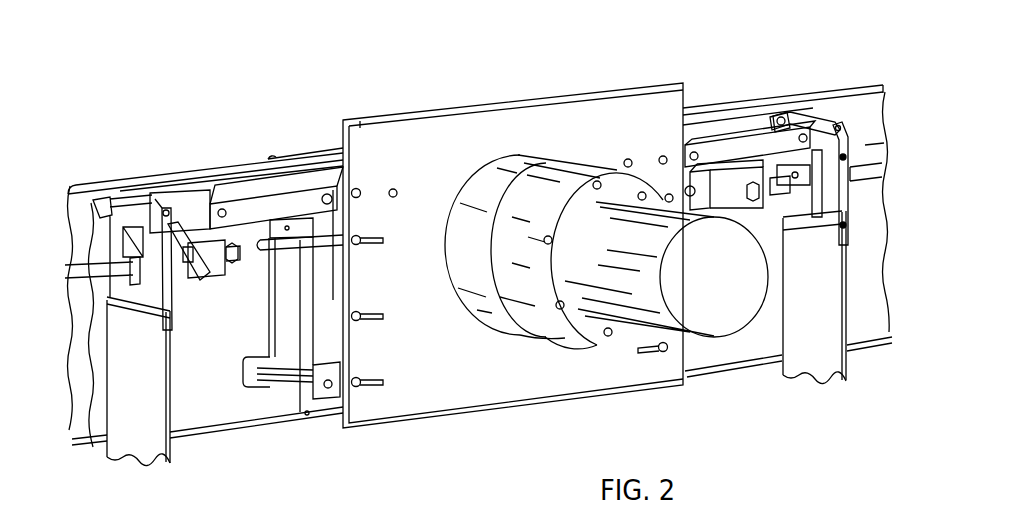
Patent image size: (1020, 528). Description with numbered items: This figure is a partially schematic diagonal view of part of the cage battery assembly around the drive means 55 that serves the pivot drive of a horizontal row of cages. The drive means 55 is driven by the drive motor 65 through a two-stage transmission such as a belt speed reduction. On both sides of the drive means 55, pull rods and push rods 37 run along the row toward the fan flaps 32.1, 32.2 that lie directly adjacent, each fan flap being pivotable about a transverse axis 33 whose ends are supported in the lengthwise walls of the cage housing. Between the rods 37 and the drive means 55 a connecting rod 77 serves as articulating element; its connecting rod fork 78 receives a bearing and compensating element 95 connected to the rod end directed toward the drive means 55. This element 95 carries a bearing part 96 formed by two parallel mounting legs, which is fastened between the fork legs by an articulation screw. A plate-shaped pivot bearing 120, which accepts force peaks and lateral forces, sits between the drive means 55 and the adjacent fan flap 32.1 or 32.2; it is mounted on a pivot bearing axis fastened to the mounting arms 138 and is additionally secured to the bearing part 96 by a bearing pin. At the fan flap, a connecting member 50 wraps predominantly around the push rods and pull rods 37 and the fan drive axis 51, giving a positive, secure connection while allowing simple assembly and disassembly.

The fan flap 32.1 is at (153, 448).
The fan flap 32.2 is at (811, 378).
The transverse axis 33 is at (838, 125).
The pull rods and push rods 37 is at (91, 443).
The connecting member 50 is at (125, 240).
The fan drive axis 51 is at (866, 148).
The drive means 55 is at (543, 368).
The drive motor 65 is at (570, 167).
The connecting rod 77 is at (281, 290).
The connecting rod fork 78 is at (246, 277).
The bearing and compensating element 95 is at (223, 290).
The bearing part 96 is at (201, 285).
The pivot bearing 120 is at (180, 210).
The mounting arms 138 is at (243, 205).